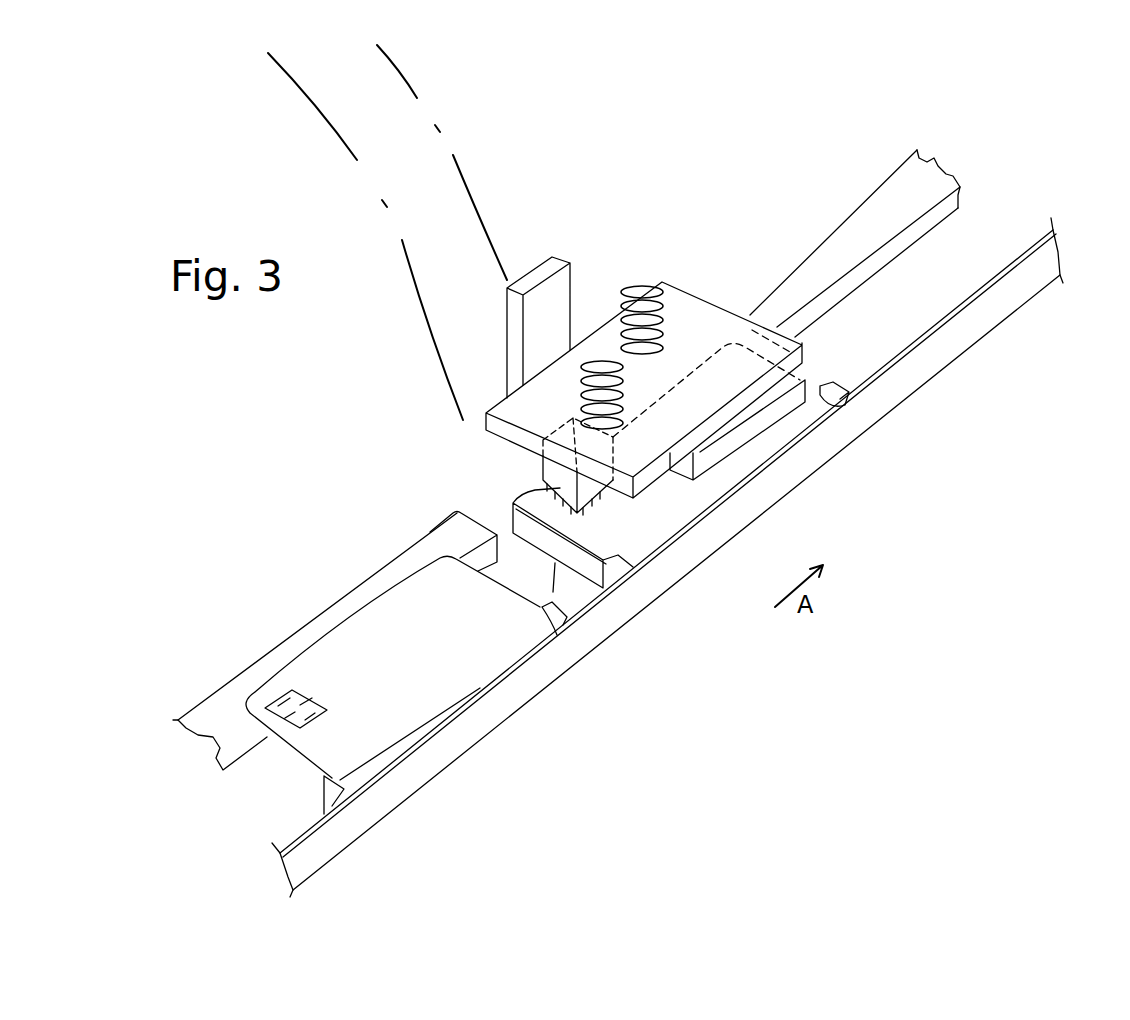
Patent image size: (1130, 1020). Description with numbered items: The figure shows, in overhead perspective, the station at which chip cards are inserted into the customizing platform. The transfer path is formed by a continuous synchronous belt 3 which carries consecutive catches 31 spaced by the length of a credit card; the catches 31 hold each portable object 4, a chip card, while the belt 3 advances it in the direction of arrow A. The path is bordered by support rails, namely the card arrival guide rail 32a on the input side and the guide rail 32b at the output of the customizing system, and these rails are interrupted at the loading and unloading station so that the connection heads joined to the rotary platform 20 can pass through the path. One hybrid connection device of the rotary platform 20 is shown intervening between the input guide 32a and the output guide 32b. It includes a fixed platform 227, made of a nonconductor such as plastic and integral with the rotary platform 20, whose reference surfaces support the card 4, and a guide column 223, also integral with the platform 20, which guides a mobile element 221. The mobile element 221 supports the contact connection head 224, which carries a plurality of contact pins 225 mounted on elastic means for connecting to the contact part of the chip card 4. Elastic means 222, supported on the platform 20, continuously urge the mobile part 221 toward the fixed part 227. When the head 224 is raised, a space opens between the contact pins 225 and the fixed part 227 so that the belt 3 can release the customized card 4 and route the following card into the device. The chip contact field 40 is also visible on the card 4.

The continuous synchronous belt 3 is at (405, 782).
The portable object 4 is at (433, 677).
The rotary platform 20 is at (739, 170).
The catches 31 is at (330, 793).
The card arrival guide rail 32a is at (198, 717).
The output guide rail 32b is at (875, 228).
The chip contact field 40 is at (283, 697).
The mobile element 221 is at (703, 337).
The elastic means 222 is at (642, 278).
The guide column 223 is at (548, 293).
The contact connection head 224 is at (543, 462).
The contact pins 225 is at (545, 497).
The fixed platform 227 is at (497, 838).